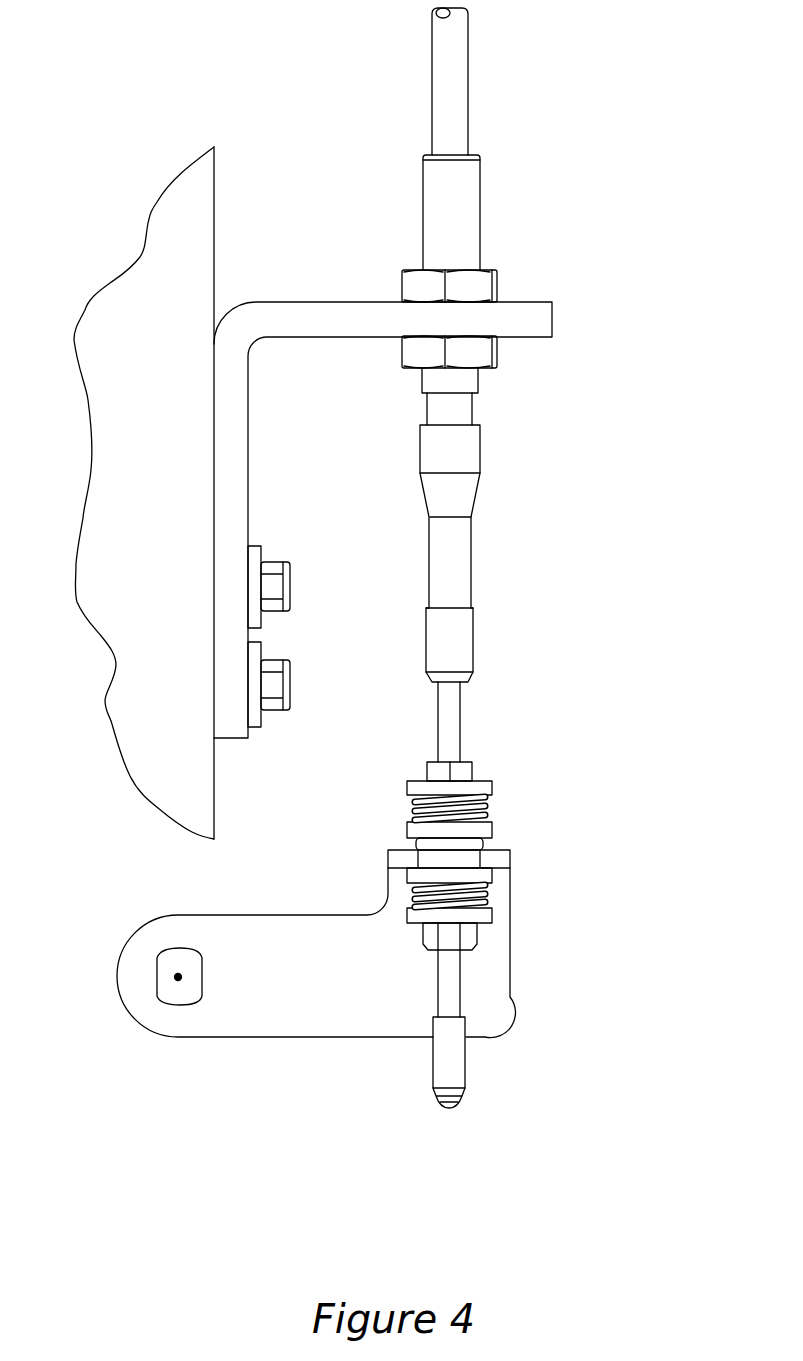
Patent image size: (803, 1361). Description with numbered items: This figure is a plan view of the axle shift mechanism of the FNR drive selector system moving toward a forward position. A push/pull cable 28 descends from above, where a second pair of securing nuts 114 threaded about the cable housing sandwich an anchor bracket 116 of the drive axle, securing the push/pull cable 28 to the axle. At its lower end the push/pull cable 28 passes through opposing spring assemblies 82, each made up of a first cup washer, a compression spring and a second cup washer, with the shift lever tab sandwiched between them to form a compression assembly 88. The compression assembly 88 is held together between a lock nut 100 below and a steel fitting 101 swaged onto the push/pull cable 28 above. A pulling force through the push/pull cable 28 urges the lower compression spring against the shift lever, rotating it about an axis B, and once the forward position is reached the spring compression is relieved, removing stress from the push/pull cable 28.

The second pair of securing nuts 114 is at (497, 284).
The anchor bracket 116 is at (552, 320).
The push/pull cable 28 is at (473, 410).
The steel fitting 101 is at (473, 759).
The spring assemblies 82 is at (397, 812).
The compression assembly 88 is at (435, 877).
The lock nut 100 is at (519, 958).
The axis B is at (178, 977).